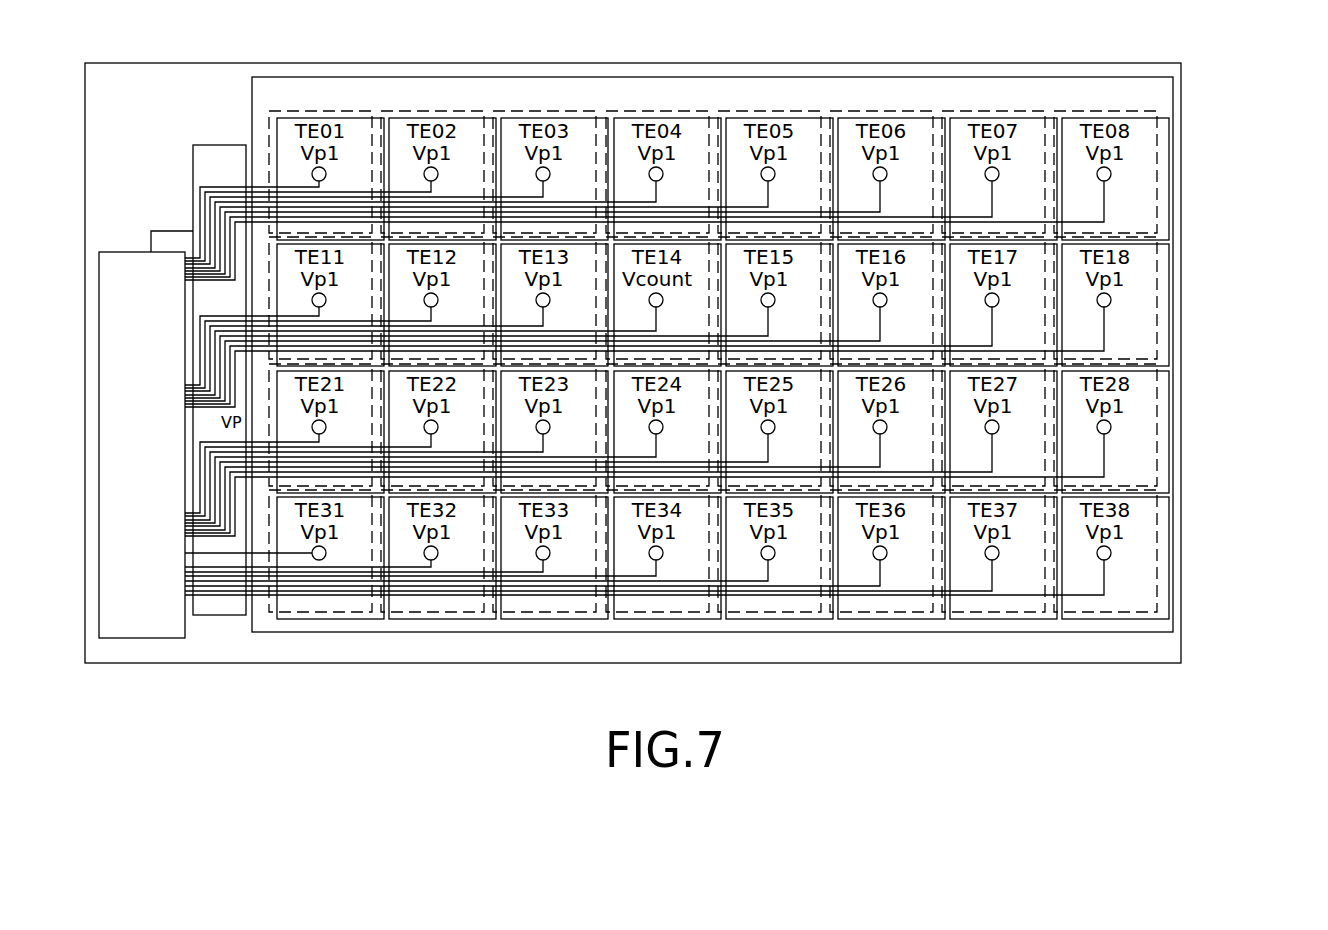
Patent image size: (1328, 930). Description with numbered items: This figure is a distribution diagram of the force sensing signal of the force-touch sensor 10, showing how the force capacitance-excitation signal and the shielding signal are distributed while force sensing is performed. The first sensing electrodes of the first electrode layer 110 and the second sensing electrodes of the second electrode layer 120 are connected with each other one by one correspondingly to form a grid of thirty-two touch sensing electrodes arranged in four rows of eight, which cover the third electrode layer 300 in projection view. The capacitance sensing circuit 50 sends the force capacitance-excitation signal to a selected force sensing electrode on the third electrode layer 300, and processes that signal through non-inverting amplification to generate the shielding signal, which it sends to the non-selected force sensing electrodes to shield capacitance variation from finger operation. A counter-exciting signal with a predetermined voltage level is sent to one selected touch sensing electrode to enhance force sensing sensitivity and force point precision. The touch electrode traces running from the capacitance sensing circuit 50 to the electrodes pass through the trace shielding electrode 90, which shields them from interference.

The force-touch sensor 10 is at (1126, 63).
The capacitance sensing circuit 50 is at (140, 252).
The trace shielding electrode 90 is at (218, 145).
The first electrode layer 110 is at (1166, 118).
The second electrode layer 120 is at (1157, 173).
The third electrode layer 300 is at (1174, 147).